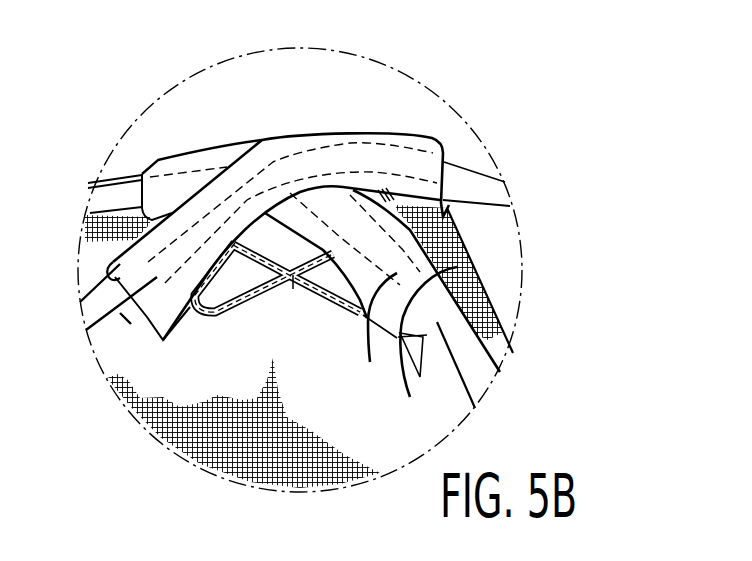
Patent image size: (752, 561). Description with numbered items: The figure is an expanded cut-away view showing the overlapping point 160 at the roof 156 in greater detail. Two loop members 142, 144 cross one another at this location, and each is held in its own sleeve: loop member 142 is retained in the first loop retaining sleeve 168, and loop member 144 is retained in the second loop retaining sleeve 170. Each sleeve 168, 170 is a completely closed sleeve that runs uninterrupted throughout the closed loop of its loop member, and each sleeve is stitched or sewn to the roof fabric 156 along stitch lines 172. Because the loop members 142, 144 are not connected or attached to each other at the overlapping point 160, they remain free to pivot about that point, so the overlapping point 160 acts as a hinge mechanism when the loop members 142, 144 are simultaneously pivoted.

The overlapping point 160 is at (338, 106).
The second loop retaining sleeve 170 is at (382, 160).
The loop member 144 is at (477, 168).
The roof fabric 156 is at (294, 345).
The first loop retaining sleeve 168 is at (378, 295).
The stitch lines 172 is at (402, 368).
The loop member 142 is at (488, 362).